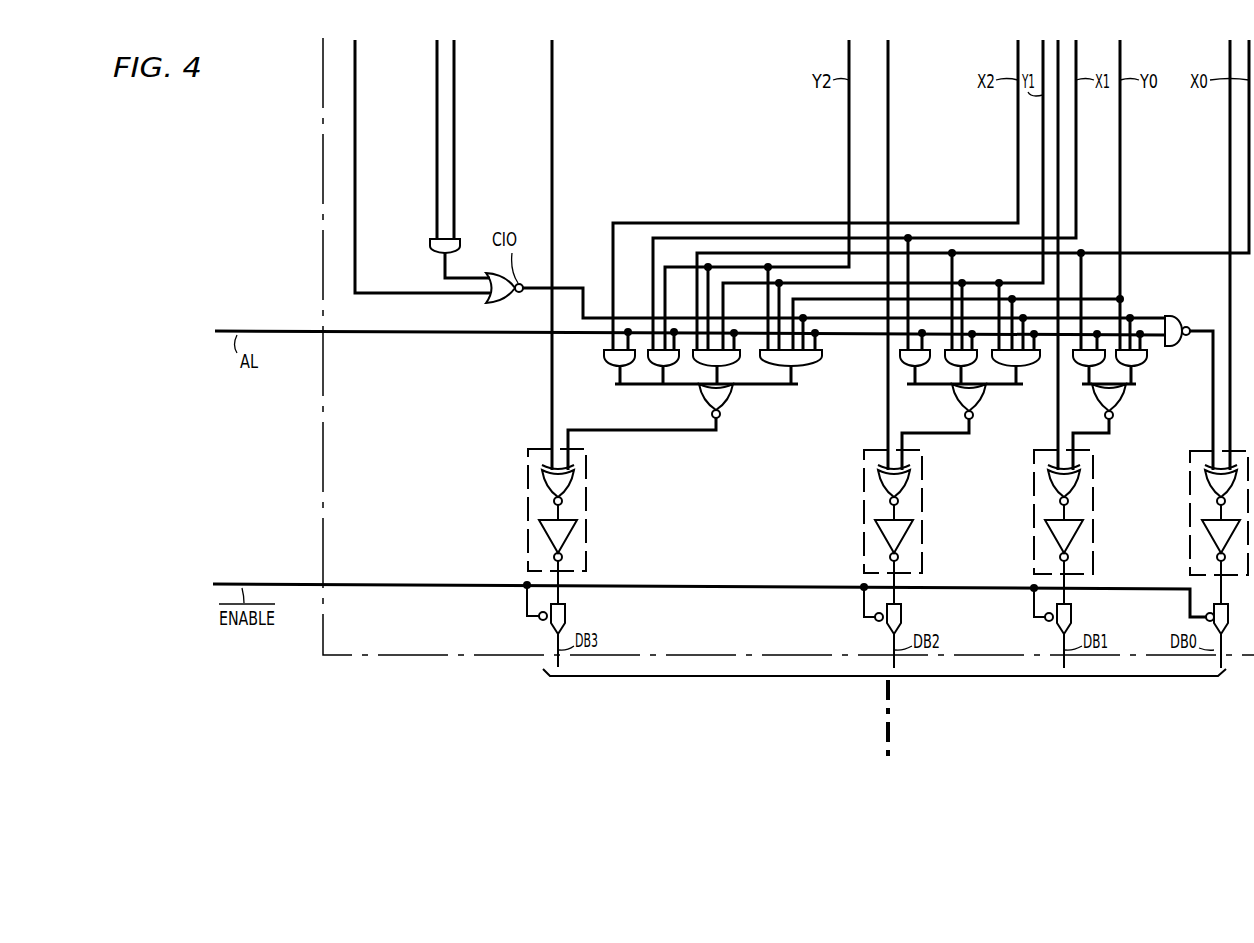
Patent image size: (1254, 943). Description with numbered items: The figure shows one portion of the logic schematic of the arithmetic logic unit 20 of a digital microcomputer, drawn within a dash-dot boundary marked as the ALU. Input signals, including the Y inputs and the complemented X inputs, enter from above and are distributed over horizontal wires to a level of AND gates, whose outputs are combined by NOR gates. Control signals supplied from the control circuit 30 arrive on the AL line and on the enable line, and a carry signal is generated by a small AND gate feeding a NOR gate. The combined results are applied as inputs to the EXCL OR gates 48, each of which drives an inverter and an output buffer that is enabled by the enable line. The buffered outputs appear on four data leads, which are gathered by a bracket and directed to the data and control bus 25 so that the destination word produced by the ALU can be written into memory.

The control circuit 30 is at (305, 529).
The EXCL OR gates 48 is at (1190, 530).
The arithmetic logic unit 20 is at (412, 642).
The data and control bus 25 is at (891, 748).